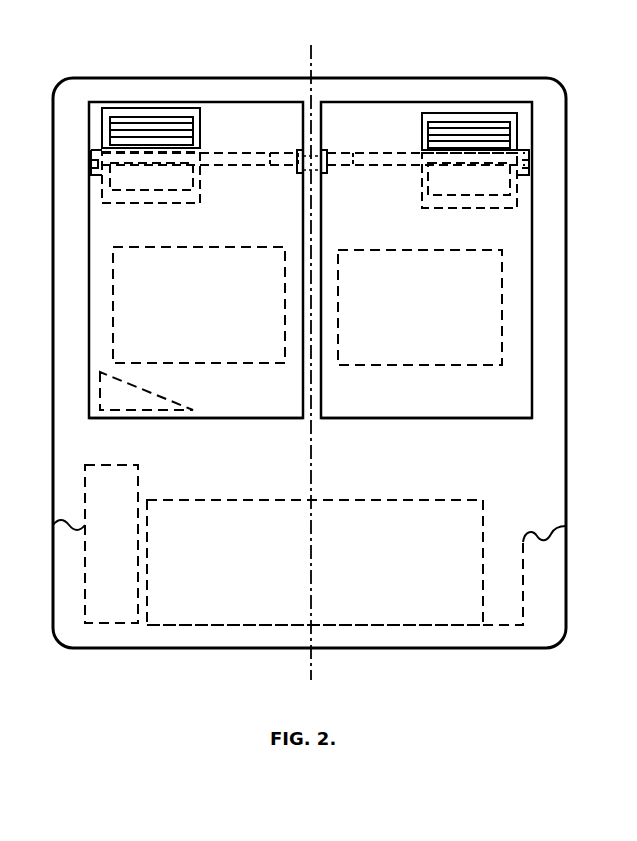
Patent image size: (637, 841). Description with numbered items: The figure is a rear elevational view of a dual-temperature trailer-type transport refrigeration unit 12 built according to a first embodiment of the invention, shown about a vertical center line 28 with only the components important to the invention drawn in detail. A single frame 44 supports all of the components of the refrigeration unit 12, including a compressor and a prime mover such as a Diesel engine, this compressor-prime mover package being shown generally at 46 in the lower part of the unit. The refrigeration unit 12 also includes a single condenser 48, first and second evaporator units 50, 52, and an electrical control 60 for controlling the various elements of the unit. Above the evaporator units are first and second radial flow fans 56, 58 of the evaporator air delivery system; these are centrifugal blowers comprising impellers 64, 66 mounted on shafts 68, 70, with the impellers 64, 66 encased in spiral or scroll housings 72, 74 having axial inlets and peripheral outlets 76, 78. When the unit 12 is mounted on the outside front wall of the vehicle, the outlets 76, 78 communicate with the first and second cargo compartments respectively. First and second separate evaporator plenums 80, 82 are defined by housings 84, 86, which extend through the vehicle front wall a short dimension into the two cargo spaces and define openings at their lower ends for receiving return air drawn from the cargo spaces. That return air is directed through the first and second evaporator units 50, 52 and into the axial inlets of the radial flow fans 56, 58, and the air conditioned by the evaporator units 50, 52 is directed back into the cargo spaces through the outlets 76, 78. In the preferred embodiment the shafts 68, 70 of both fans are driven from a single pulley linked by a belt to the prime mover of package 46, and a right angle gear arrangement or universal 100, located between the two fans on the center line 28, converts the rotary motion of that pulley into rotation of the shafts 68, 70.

The transport refrigeration unit 12 is at (442, 650).
The central axis 28 is at (312, 63).
The frame 44 is at (187, 619).
The compressor-prime mover package 46 is at (247, 500).
The condenser 48 is at (150, 387).
The first evaporator unit 50 is at (242, 247).
The second evaporator unit 52 is at (368, 248).
The first radial flow fan 56 is at (150, 205).
The second radial flow fan 58 is at (467, 208).
The electrical control 60 is at (140, 493).
The impeller 64 is at (199, 117).
The impeller 66 is at (425, 127).
The shaft 68 is at (222, 165).
The shaft 70 is at (397, 168).
The scroll housing 72 is at (134, 204).
The scroll housing 74 is at (492, 210).
The peripheral outlet 76 is at (159, 112).
The peripheral outlet 78 is at (472, 116).
The first evaporator plenum 80 is at (267, 407).
The second evaporator plenum 82 is at (380, 398).
The housing 84 is at (203, 418).
The housing 86 is at (443, 418).
The right angle gear arrangement 100 is at (297, 172).